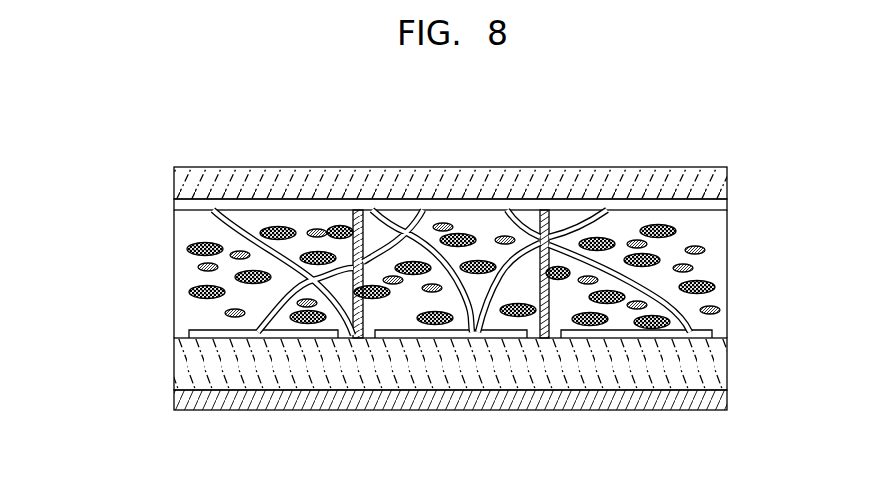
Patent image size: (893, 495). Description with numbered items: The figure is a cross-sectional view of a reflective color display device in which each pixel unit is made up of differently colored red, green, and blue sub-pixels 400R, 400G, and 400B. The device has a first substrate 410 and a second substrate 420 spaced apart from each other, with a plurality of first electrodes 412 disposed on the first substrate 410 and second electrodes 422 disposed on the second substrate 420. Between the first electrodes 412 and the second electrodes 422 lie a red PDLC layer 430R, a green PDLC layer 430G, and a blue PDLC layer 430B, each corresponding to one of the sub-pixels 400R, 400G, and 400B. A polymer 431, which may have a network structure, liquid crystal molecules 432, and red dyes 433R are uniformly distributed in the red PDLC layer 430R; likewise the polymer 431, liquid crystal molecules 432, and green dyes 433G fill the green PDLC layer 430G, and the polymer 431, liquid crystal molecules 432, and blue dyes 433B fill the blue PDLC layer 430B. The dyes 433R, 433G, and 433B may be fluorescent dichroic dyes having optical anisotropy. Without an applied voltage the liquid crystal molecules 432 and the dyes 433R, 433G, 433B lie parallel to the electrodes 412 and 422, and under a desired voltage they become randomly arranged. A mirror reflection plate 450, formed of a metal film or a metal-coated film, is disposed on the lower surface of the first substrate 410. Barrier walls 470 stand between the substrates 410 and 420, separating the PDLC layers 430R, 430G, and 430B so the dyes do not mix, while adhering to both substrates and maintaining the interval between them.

The red sub-pixel 400R is at (345, 157).
The green sub-pixel 400G is at (533, 157).
The blue sub-pixel 400B is at (720, 157).
The barrier wall 470 is at (360, 210).
The second substrate 420 is at (727, 187).
The second electrode 422 is at (727, 207).
The first substrate 410 is at (727, 365).
The mirror reflection plate 450 is at (727, 402).
The first electrode 412 is at (205, 338).
The polymer 431 is at (223, 222).
The liquid crystal molecules 432 is at (195, 251).
The red dyes 433R is at (198, 268).
The green dyes 433G is at (393, 283).
The blue dyes 433B is at (720, 310).
The red PDLC layer 430R is at (93, 227).
The green PDLC layer 430G is at (502, 453).
The blue PDLC layer 430B is at (810, 255).